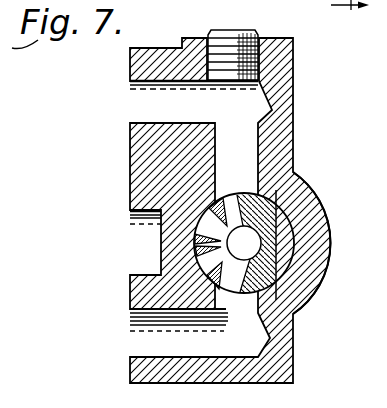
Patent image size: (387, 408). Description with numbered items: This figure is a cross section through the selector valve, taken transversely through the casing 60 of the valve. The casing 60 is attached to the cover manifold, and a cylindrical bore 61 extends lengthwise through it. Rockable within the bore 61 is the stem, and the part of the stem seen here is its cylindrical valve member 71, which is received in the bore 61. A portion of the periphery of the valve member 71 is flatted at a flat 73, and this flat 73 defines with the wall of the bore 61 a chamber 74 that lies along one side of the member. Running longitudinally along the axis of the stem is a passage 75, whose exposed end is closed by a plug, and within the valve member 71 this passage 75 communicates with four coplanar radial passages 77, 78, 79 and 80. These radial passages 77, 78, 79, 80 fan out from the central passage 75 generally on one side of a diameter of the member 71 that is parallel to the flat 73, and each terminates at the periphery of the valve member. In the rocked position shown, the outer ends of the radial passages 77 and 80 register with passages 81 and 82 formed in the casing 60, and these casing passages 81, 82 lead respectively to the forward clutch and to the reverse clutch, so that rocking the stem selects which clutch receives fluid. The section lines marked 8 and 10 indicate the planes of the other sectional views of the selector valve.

The casing 60 is at (294, 64).
The cylindrical bore 61 is at (287, 273).
The cylindrical valve member 71 is at (293, 173).
The flat 73 is at (273, 240).
The chamber 74 is at (288, 220).
The passage 75 is at (262, 256).
The radial passage 77 is at (225, 212).
The radial passage 78 is at (208, 231).
The radial passage 79 is at (208, 257).
The radial passage 80 is at (224, 275).
The casing passage 81 is at (231, 107).
The casing passage 82 is at (218, 311).
The section line 8— 8 is at (334, 14).
The section line 10— 10 is at (364, 23).